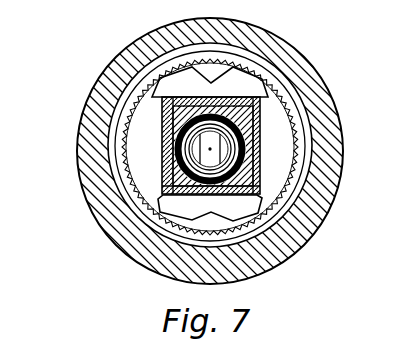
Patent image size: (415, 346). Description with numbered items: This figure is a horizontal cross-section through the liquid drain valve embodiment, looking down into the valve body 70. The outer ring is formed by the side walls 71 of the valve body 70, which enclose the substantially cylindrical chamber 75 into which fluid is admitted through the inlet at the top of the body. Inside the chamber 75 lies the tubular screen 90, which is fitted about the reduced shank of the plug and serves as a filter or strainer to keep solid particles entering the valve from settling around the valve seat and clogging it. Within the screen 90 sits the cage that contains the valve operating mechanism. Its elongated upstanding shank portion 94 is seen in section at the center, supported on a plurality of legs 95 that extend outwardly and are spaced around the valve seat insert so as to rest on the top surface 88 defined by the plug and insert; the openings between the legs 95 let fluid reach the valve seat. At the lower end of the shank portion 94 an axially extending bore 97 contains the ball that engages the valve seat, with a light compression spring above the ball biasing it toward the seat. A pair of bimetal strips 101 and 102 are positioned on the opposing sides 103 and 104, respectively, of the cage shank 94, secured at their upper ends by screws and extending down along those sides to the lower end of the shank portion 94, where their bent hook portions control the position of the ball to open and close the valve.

The valve body 70 is at (338, 122).
The side walls 71 is at (328, 170).
The chamber 75 is at (115, 123).
The top surface 88 is at (284, 80).
The screen 90 is at (150, 212).
The shank portion 94 is at (311, 230).
The legs 95 is at (235, 78).
The bore 97 is at (164, 138).
The bimetal strip 101 is at (127, 180).
The bimetal strip 102 is at (255, 172).
The side 103 is at (161, 172).
The side 104 is at (258, 150).